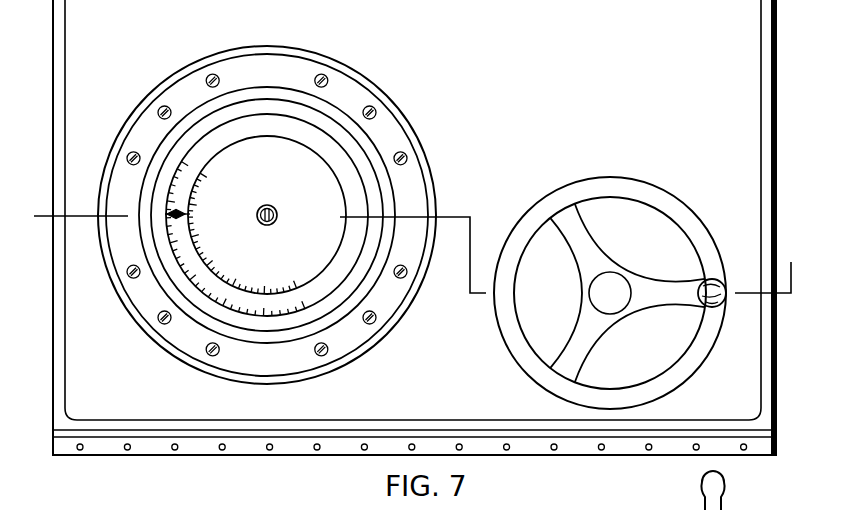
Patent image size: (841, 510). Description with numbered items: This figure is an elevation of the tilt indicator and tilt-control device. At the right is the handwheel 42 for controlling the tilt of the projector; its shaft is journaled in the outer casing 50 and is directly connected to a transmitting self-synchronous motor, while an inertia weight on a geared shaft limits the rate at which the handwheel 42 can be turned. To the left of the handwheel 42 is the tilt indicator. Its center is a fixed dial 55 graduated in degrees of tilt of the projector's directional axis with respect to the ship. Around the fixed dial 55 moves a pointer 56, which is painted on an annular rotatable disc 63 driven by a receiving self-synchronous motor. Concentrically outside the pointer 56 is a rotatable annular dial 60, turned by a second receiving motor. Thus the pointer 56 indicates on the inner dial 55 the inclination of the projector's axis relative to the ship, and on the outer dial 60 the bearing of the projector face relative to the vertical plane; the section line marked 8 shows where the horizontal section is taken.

The section line 8- 8 is at (34, 216).
The handwheel 42 is at (693, 348).
The outer casing 50 is at (765, 377).
The fixed dial 55 is at (327, 204).
The pointer 56 is at (174, 220).
The rotatable annular dial 60 is at (243, 315).
The annular rotatable disc 63 is at (215, 295).